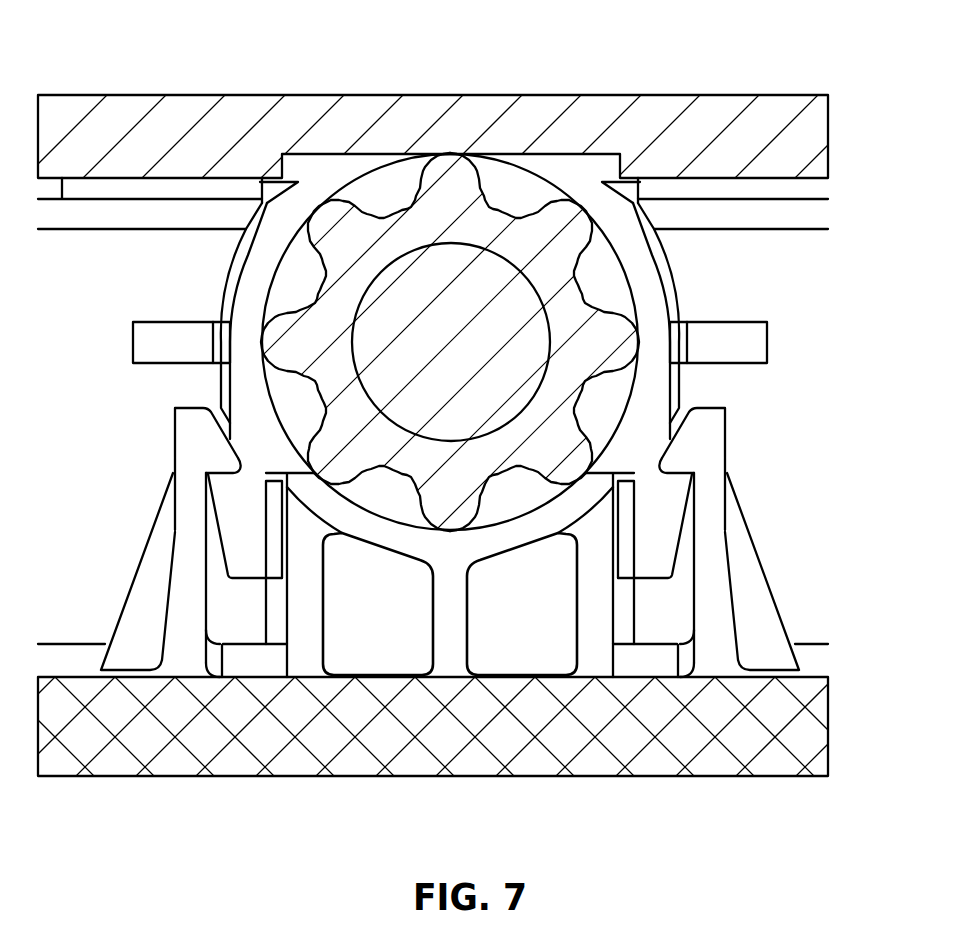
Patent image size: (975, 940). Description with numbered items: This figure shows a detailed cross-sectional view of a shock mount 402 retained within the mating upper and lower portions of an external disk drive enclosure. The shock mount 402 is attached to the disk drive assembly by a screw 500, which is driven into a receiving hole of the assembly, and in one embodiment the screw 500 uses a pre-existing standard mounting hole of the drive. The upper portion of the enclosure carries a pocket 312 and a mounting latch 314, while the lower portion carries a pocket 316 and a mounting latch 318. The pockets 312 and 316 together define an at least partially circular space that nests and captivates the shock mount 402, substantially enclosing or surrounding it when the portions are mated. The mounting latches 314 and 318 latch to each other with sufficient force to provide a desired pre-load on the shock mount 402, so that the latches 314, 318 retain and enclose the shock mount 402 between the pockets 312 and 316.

The pocket 312 is at (507, 540).
The mounting latch 314 is at (188, 553).
The pocket 316 is at (262, 278).
The mounting latch 318 is at (229, 488).
The shock mount 402 is at (453, 203).
The screw 500 is at (473, 300).